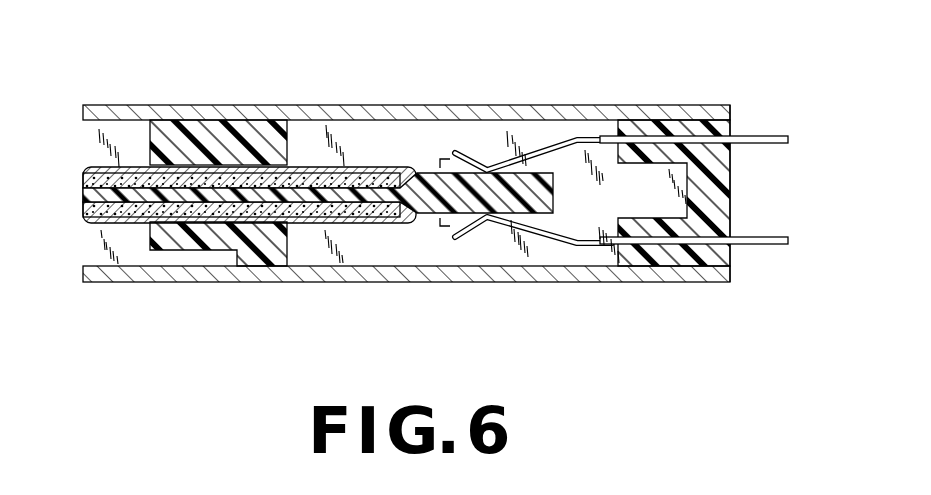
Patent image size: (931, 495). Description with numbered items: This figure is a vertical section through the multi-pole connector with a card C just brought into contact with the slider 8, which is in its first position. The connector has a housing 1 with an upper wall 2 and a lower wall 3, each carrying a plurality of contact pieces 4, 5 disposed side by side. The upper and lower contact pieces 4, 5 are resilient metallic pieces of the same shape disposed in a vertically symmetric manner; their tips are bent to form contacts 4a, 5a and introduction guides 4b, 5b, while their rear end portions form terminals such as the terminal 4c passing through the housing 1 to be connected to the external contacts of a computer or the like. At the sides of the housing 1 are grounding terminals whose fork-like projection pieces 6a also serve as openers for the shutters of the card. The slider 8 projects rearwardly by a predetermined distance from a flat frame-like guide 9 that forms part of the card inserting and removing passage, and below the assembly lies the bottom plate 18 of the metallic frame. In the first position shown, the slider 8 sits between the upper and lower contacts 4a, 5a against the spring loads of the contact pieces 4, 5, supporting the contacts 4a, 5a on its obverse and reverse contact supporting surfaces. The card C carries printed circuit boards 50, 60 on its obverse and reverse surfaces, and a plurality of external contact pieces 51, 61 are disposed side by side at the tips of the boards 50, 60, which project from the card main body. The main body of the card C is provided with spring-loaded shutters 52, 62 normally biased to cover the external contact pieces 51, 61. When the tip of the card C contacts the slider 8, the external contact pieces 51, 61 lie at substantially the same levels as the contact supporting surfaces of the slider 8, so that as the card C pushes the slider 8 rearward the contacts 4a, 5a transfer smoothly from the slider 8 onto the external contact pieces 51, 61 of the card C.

The housing 1 is at (740, 183).
The upper wall 2 is at (628, 120).
The lower wall 3 is at (630, 266).
The contact piece 4 is at (572, 139).
The contact 4a is at (500, 162).
The introduction guide 4b is at (457, 150).
The terminal 4c is at (765, 136).
The contact piece 5 is at (575, 245).
The contact 5a is at (500, 225).
The introduction guide 5b is at (457, 241).
The projection piece 6a is at (440, 161).
The slider 8 is at (540, 207).
The guide 9 is at (217, 120).
The bottom plate 18 is at (183, 250).
The printed circuit board 50 is at (132, 168).
The external contact piece 51 is at (365, 174).
The shutter 52 is at (299, 167).
The printed circuit board 60 is at (135, 222).
The external contact piece 61 is at (365, 216).
The shutter 62 is at (299, 223).
The card C is at (75, 208).